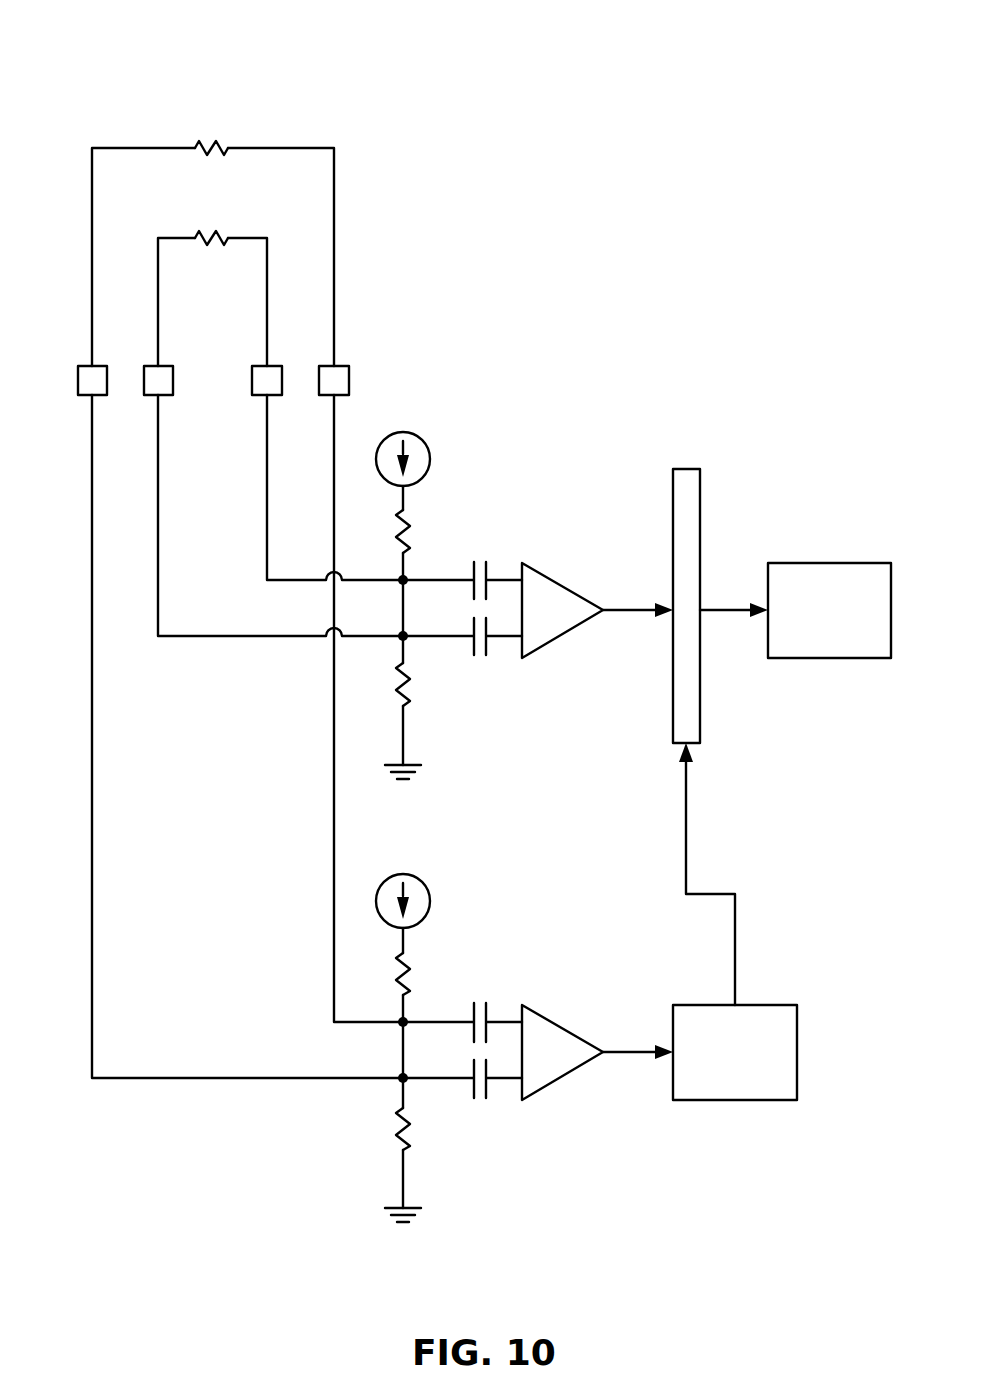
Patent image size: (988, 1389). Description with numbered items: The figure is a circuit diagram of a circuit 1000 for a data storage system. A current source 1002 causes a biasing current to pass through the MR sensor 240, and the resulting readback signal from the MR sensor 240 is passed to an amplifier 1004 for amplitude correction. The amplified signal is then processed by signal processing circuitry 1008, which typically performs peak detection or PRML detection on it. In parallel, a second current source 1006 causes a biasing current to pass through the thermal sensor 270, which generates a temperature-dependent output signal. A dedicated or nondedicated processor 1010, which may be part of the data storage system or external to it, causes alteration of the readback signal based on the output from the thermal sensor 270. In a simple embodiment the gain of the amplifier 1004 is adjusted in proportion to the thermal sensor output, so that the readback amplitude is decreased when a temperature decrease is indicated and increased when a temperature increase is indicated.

The circuit 1000 is at (88, 82).
The thermal sensor 270 is at (229, 147).
The MR sensor 240 is at (229, 237).
The current source 1002 is at (422, 436).
The amplifier 1004 is at (701, 487).
The second current source 1006 is at (417, 878).
The signal processing circuitry 1008 is at (830, 562).
The processor 1010 is at (770, 1004).